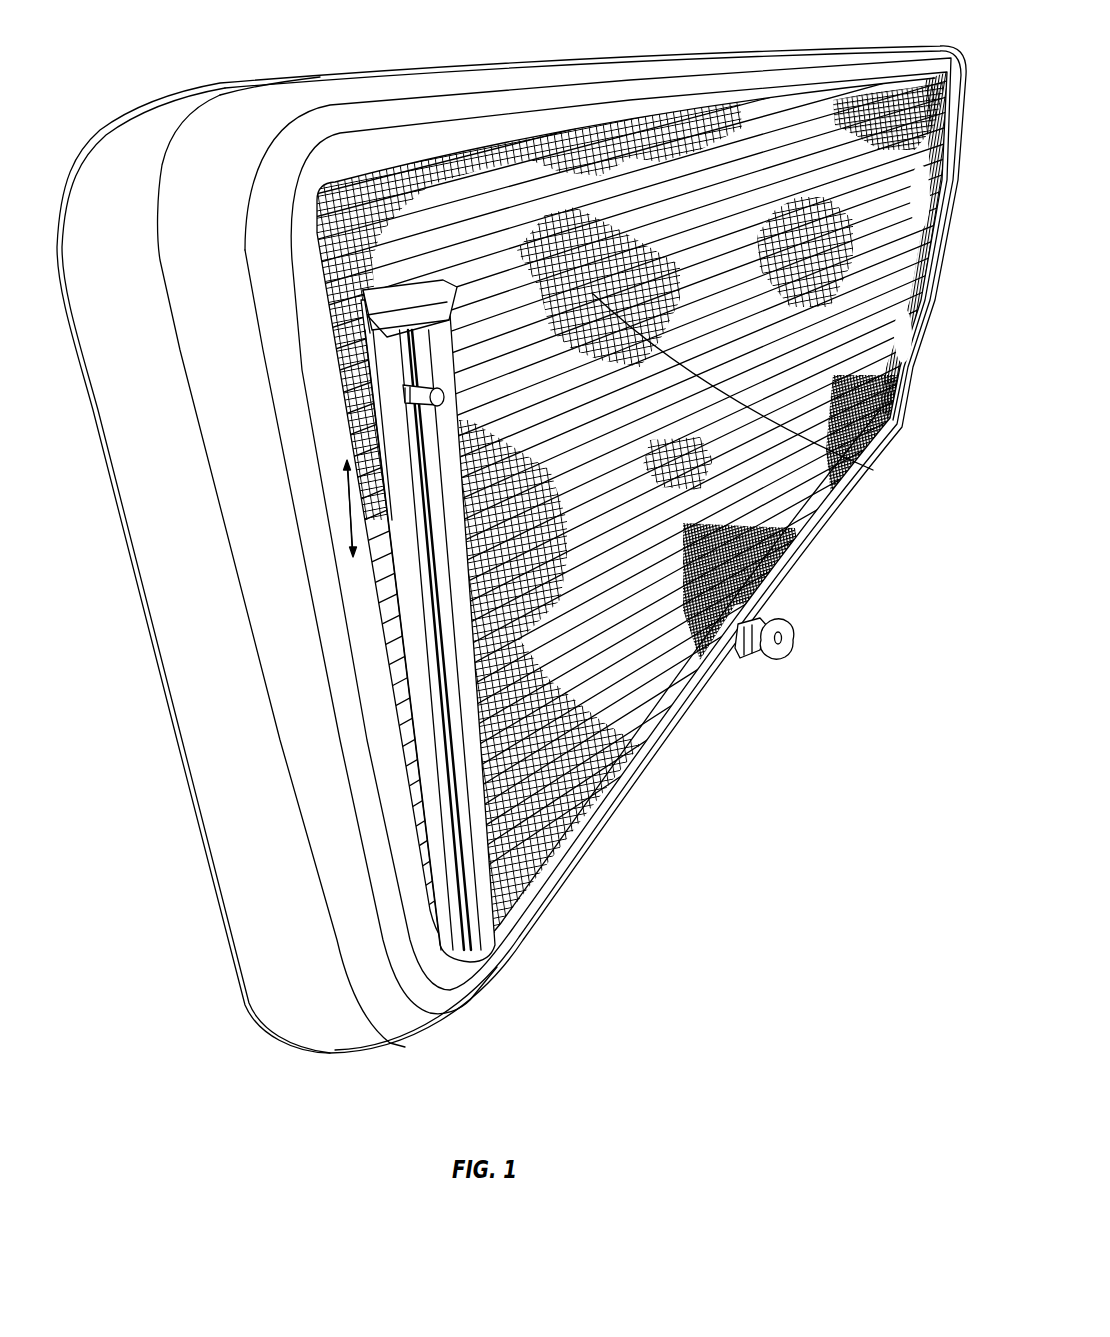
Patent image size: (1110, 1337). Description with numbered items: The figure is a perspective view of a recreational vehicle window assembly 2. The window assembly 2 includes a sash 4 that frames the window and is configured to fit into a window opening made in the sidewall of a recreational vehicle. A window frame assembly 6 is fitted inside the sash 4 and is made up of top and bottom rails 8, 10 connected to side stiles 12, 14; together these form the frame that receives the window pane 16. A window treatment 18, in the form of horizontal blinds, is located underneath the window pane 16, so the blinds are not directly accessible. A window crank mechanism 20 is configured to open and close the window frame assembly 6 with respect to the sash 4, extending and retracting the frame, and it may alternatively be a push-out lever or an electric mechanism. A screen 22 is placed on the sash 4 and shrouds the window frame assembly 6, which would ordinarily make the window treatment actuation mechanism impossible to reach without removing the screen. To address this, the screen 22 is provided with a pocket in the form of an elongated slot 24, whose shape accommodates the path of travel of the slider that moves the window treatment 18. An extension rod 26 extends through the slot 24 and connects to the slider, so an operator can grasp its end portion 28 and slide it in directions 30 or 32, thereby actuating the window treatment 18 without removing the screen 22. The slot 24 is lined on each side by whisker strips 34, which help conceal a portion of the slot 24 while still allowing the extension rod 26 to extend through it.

The recreational vehicle window assembly 2 is at (839, 32).
The sash 4 is at (822, 544).
The window frame assembly 6 is at (593, 743).
The top rail 8 is at (537, 135).
The bottom rail 10 is at (850, 497).
The side stile 12 is at (373, 178).
The side stile 14 is at (885, 310).
The window pane 16 is at (818, 256).
The window treatment 18 is at (873, 470).
The window crank mechanism 20 is at (782, 642).
The screen 22 is at (320, 163).
The slot 24 is at (357, 621).
The extension rod 26 is at (410, 389).
The end portion 28 is at (410, 398).
The direction 30 is at (352, 554).
The direction 32 is at (345, 463).
The whisker strips 34 is at (443, 746).